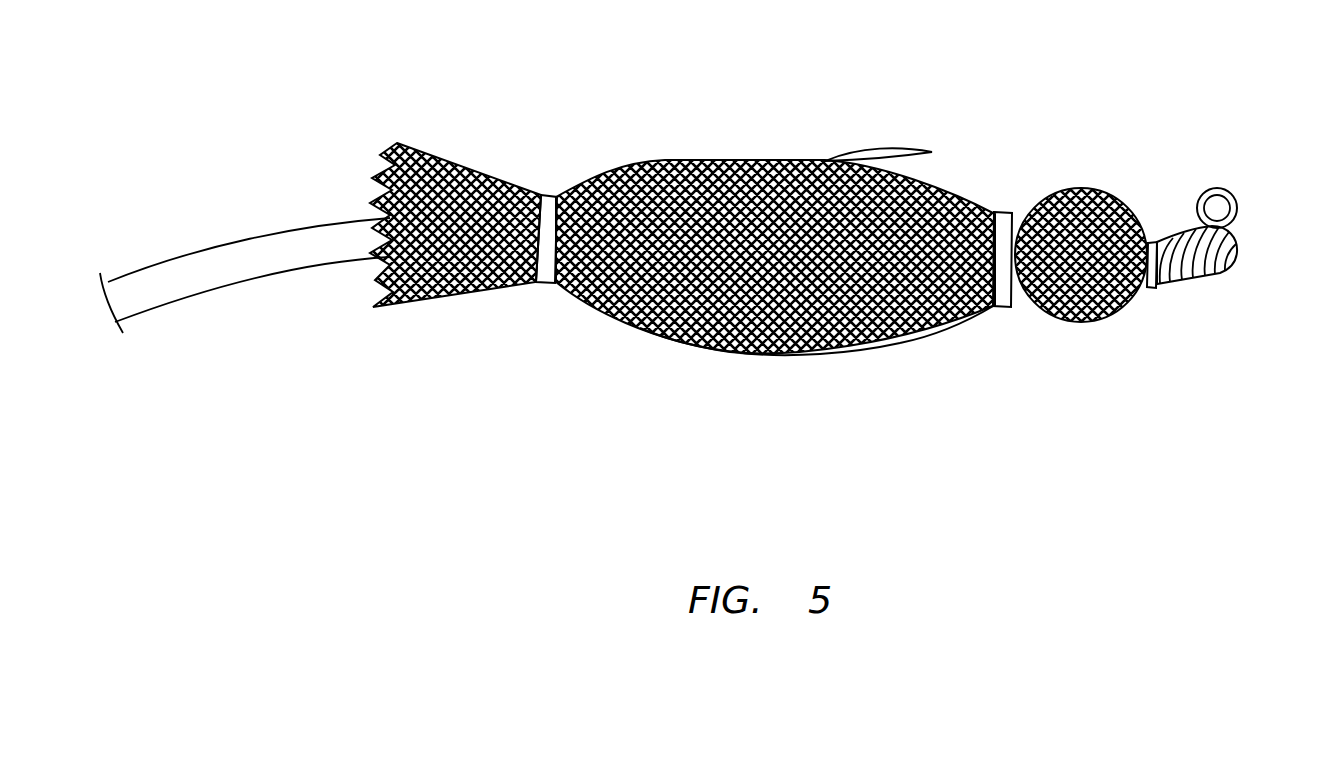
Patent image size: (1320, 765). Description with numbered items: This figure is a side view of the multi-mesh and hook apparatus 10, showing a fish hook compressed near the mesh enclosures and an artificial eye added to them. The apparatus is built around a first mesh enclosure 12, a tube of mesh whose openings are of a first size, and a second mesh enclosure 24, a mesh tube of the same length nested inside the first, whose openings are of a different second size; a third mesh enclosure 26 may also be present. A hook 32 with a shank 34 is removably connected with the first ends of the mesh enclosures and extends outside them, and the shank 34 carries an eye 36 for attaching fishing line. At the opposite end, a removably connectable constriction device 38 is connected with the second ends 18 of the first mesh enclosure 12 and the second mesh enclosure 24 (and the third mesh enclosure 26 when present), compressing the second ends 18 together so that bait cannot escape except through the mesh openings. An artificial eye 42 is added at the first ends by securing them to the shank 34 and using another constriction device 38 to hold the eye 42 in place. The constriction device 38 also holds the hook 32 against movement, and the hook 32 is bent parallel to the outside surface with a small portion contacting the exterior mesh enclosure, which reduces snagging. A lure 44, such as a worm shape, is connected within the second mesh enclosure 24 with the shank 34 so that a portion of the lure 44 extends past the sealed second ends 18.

The multi-mesh and hook apparatus 10 is at (1071, 52).
The first mesh enclosure 12 is at (660, 333).
The second end 18 is at (381, 187).
The second mesh enclosure 24 is at (715, 340).
The third mesh enclosure 26 is at (765, 352).
The hook 32 is at (868, 152).
The shank 34 is at (970, 322).
The eye 36 is at (1230, 198).
The removably connectable constriction device 38 is at (548, 195).
The artificial eye 42 is at (1117, 308).
The lure 44 is at (187, 288).